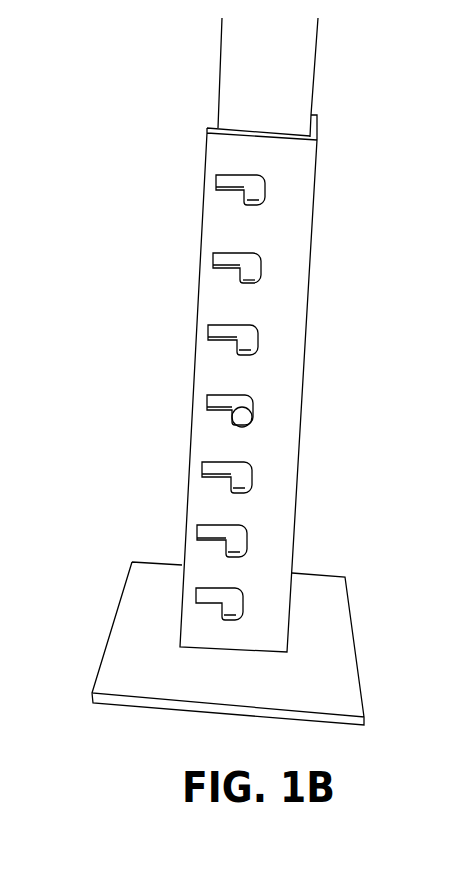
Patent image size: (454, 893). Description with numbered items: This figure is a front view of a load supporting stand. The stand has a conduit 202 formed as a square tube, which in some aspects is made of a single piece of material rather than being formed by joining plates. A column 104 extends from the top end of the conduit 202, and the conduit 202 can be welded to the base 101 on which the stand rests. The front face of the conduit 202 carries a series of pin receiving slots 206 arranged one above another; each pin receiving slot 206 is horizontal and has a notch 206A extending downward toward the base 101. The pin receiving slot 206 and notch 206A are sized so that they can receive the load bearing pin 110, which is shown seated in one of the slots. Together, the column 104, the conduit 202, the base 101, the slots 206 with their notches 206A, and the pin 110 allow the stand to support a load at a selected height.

The base 101 is at (322, 657).
The column 104 is at (295, 82).
The pin 110 is at (243, 425).
The conduit 202 is at (297, 298).
The pin receiving slot 206 is at (213, 262).
The notch 206A is at (248, 285).